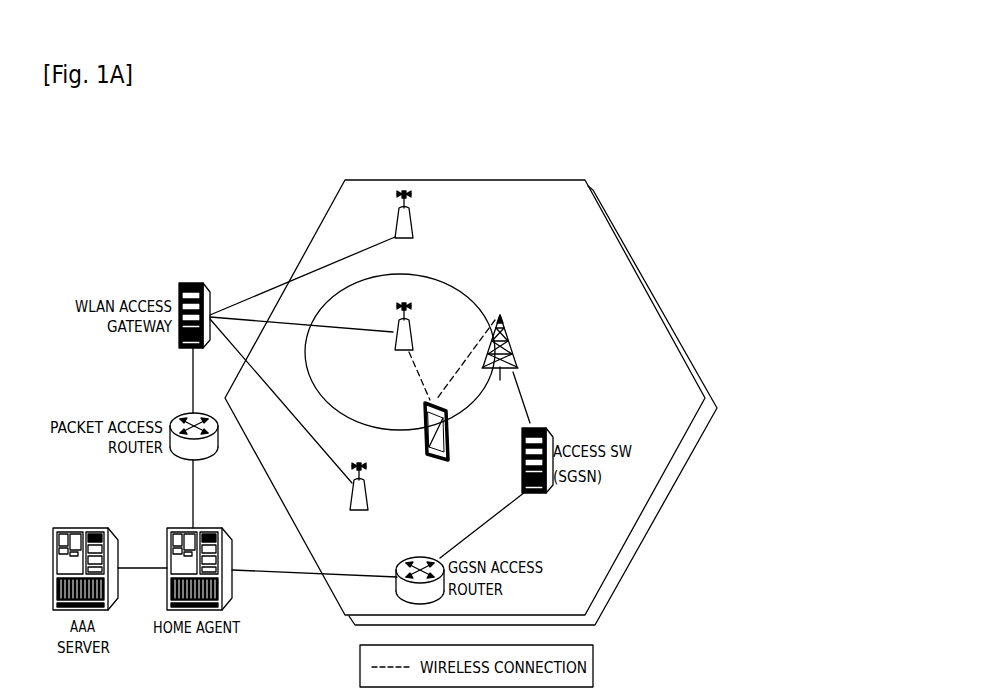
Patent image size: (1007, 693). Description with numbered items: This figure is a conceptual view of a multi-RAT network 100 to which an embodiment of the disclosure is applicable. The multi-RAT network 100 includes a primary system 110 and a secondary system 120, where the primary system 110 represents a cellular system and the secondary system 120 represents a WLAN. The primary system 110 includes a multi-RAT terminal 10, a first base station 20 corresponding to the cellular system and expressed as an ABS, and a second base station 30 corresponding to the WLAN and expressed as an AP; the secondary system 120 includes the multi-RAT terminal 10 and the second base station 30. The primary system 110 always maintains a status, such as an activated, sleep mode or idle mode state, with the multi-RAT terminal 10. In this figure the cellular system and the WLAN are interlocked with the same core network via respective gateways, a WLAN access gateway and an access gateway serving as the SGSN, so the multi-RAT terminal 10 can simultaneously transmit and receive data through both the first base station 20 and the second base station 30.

The multi-RAT network 100 is at (557, 159).
The primary system 110 is at (628, 248).
The secondary system 120 is at (455, 283).
The multi-RAT terminal 10 is at (450, 441).
The first base station 20 is at (508, 338).
The second base station 30 is at (413, 232).